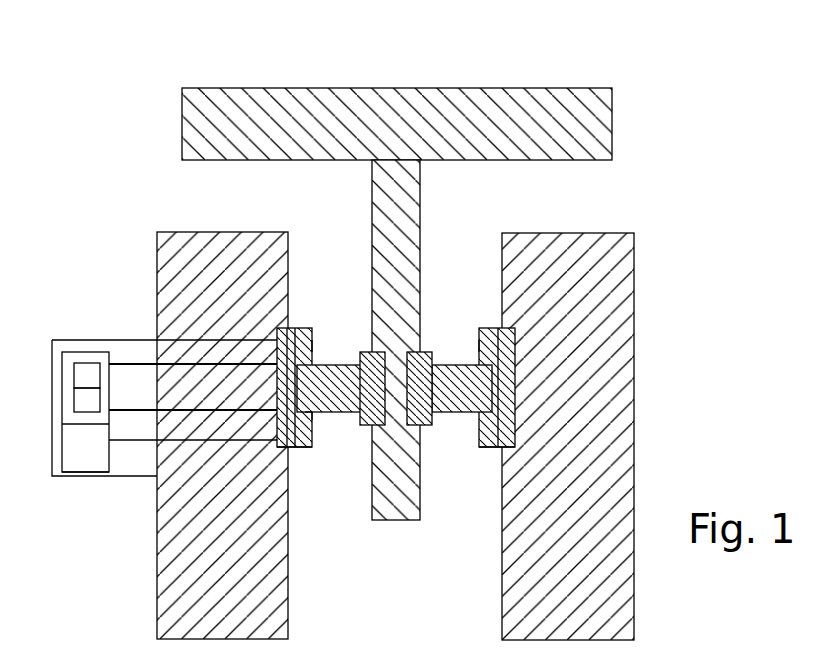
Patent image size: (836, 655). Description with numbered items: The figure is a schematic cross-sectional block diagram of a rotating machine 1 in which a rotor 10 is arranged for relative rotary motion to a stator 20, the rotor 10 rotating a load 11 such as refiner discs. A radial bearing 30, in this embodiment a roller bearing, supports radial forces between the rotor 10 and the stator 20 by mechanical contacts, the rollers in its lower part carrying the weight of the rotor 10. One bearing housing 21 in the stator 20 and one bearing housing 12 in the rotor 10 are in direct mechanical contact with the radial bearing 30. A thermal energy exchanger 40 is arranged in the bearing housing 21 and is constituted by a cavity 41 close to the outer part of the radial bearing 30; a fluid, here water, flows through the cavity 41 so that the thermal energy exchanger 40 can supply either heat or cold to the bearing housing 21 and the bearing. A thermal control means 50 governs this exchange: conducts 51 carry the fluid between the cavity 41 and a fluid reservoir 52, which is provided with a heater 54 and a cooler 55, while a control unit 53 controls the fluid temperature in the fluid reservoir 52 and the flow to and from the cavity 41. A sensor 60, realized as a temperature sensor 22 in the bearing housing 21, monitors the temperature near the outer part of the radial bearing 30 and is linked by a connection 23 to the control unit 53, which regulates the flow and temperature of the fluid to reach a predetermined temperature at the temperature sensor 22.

The rotating machine 1 is at (698, 61).
The rotor 10 is at (390, 520).
The load 11 is at (197, 132).
The bearing housing 12 is at (370, 352).
The stator 20 is at (168, 263).
The bearing housing 21 is at (312, 340).
The temperature sensor 22 is at (308, 415).
The connection 23 is at (135, 444).
The radial bearing 30 is at (342, 412).
The thermal energy exchanger 40 is at (297, 329).
The cavity 41 is at (295, 447).
The thermal control means 50 is at (188, 340).
The conducts 51 is at (140, 410).
The fluid reservoir 52 is at (75, 351).
The control unit 53 is at (78, 462).
The heater 54 is at (88, 381).
The cooler 55 is at (88, 403).
The sensor 60 is at (313, 417).